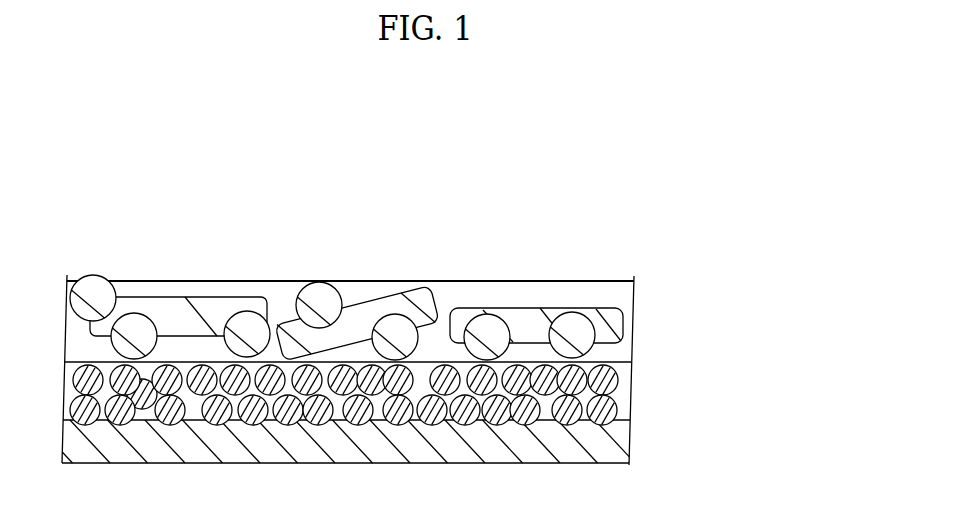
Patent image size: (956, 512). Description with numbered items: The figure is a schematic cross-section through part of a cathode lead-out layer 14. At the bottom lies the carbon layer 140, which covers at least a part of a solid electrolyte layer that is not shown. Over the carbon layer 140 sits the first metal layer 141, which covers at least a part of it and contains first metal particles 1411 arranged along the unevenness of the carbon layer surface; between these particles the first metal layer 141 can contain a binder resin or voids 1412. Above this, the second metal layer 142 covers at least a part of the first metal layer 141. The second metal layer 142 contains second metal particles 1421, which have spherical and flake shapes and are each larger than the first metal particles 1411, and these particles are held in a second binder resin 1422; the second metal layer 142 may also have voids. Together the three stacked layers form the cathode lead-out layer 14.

The cathode lead-out layer 14 is at (360, 182).
The carbon layer 140 is at (607, 438).
The first metal layer 141 is at (768, 350).
The first metal particles 1411 is at (607, 401).
The binder resin or voids 1412 is at (610, 365).
The second metal layer 142 is at (768, 252).
The second metal particles 1421 is at (605, 325).
The second binder resin 1422 is at (593, 287).